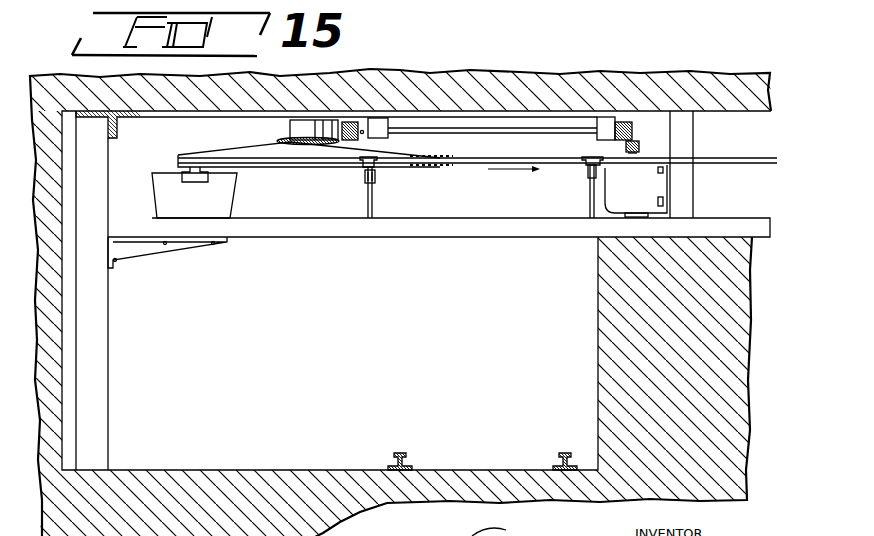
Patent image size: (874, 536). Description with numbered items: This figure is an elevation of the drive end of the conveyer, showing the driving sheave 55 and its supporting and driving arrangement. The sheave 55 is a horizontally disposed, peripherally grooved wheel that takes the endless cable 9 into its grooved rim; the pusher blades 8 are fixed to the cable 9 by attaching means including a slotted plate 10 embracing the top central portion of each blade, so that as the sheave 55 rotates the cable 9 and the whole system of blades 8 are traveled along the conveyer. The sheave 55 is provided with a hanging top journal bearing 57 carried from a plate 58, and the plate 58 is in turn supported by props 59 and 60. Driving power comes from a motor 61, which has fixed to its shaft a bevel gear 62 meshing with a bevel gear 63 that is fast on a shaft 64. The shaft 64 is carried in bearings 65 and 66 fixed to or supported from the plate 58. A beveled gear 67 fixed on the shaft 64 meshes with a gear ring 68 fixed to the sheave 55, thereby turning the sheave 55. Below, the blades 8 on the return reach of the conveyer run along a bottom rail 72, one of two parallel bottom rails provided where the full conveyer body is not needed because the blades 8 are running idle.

The pusher blades 8 is at (231, 193).
The endless cable 9 is at (520, 164).
The slotted plate 10 is at (200, 181).
The sheave 55 is at (224, 156).
The hanging top journal bearing 57 is at (290, 123).
The plate 58 is at (514, 113).
The prop 59 is at (108, 180).
The prop 60 is at (694, 134).
The motor 61 is at (612, 200).
The bevel gear 62 is at (626, 146).
The bevel gear 63 is at (632, 133).
The shaft 64 is at (479, 135).
The bearing 65 is at (603, 126).
The bearing 66 is at (380, 126).
The beveled gear 67 is at (351, 122).
The gear ring 68 is at (310, 146).
The bottom rail 72 is at (338, 238).